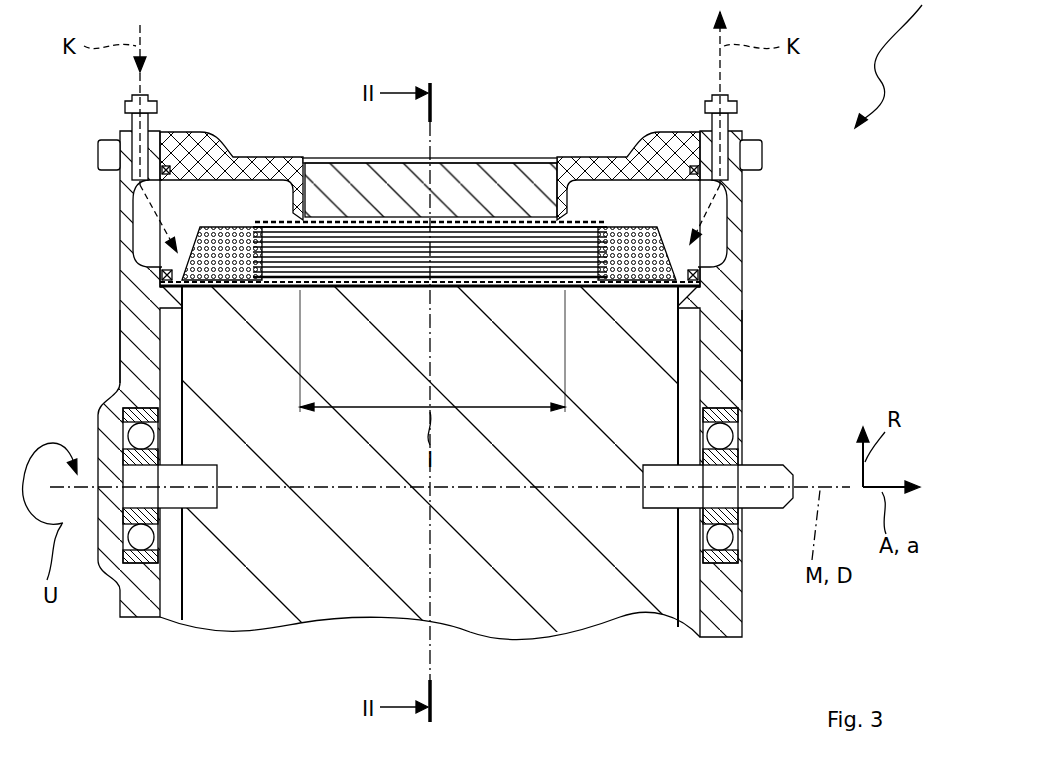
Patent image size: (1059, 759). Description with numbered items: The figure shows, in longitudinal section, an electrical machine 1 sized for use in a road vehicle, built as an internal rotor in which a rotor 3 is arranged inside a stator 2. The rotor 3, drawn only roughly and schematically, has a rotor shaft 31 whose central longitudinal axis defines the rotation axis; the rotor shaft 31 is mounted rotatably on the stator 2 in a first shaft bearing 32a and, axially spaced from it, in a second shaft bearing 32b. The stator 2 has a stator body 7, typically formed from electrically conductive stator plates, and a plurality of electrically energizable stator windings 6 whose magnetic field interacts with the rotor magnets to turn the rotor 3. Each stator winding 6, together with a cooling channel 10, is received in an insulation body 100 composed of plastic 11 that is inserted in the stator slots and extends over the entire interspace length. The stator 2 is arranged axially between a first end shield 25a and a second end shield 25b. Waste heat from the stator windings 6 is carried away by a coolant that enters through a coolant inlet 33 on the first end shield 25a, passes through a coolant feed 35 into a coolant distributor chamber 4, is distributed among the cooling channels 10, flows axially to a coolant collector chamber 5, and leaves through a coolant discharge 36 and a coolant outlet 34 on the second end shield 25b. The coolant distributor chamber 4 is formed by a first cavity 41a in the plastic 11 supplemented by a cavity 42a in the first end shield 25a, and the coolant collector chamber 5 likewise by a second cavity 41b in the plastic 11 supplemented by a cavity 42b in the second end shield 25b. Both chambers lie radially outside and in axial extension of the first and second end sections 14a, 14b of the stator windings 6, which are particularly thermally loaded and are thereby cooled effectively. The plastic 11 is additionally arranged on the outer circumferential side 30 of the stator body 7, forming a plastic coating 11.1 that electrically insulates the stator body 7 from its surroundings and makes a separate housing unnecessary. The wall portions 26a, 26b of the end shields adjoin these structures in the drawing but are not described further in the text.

The electrical machine 1 is at (890, 64).
The stator 2 is at (550, 147).
The rotor 3 is at (424, 539).
The coolant distributor chamber 4 is at (236, 220).
The coolant collector chamber 5 is at (603, 223).
The stator winding 6 is at (256, 212).
The stator body 7 is at (469, 147).
The cooling channel 10 is at (378, 215).
The plastic 11 is at (598, 147).
The plastic coating 11.1 is at (508, 158).
The first end section 14a is at (195, 250).
The second end section 14b is at (672, 252).
The first end shield 25a is at (108, 310).
The second end shield 25b is at (756, 310).
The first wall section 26a is at (120, 372).
The second wall section 26b is at (742, 371).
The outer circumferential side 30 is at (338, 160).
The rotor shaft 31 is at (764, 496).
The first shaft bearing 32a is at (123, 417).
The second shaft bearing 32b is at (740, 417).
The coolant inlet 33 is at (127, 103).
The coolant outlet 34 is at (737, 103).
The coolant feed 35 is at (99, 155).
The coolant discharge 36 is at (745, 155).
The first cavity 41a is at (232, 200).
The second cavity 41b is at (650, 195).
The cavity 42a is at (145, 208).
The cavity 42b is at (718, 212).
The insulation body 100 is at (498, 302).